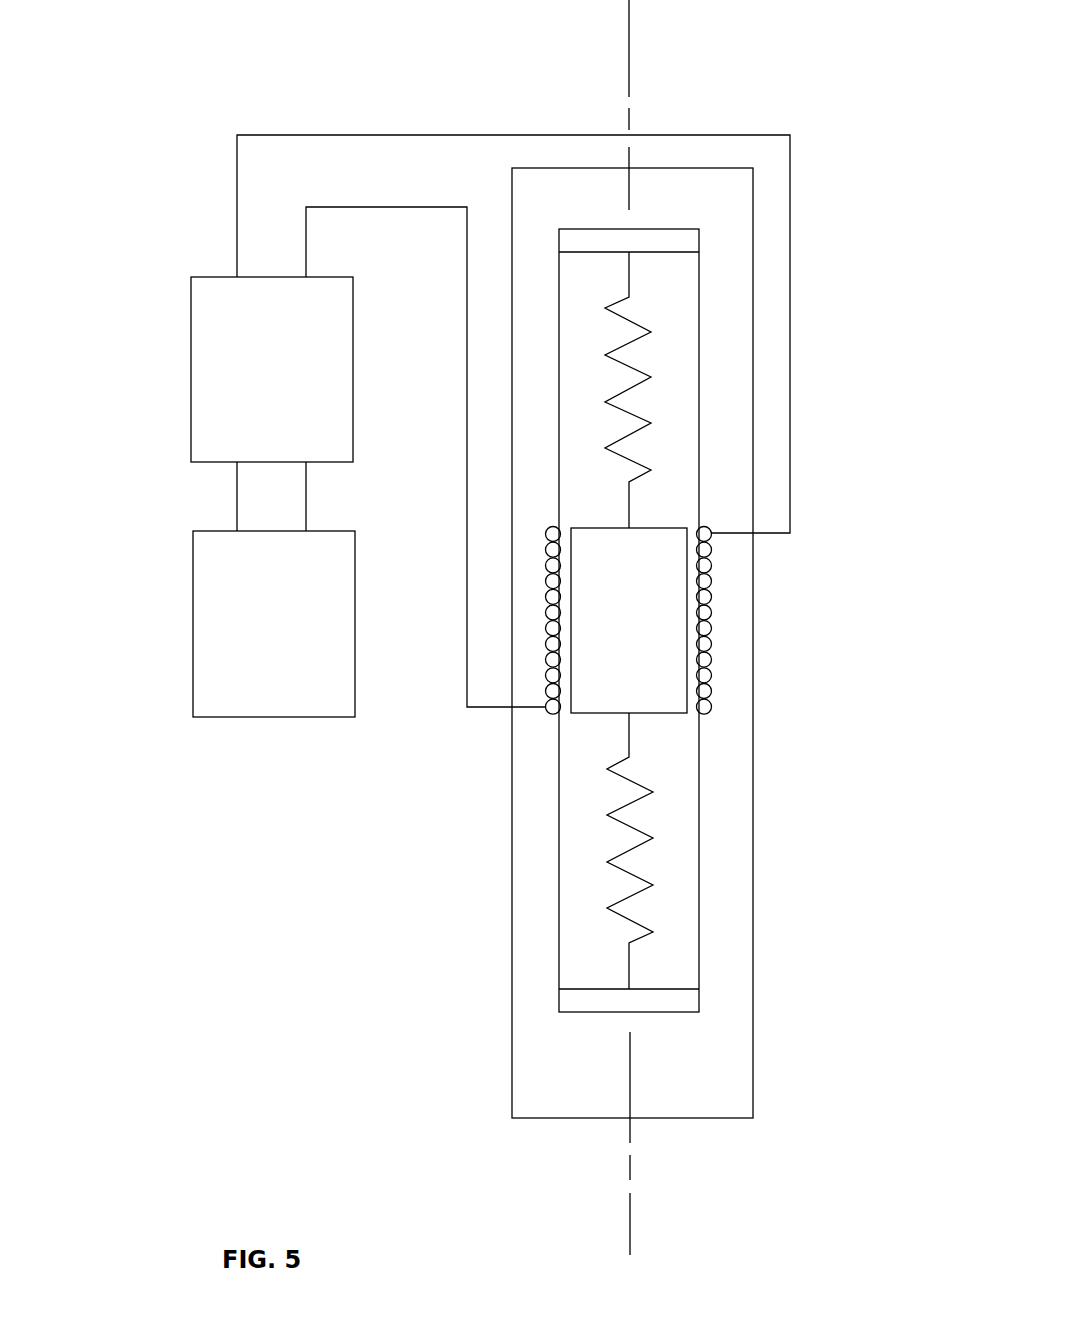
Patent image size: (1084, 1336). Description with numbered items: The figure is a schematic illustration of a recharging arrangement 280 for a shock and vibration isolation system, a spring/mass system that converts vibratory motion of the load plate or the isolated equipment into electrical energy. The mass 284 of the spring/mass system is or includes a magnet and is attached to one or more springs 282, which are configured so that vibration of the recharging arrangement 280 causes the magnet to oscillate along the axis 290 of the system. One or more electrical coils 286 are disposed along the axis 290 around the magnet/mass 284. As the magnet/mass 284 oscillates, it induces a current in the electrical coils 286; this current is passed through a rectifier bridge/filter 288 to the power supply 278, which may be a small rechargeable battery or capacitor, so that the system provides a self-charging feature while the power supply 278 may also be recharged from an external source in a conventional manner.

The power supply 278 is at (193, 613).
The recharging arrangement 280 is at (512, 925).
The springs 282 is at (625, 362).
The mass 284 is at (663, 713).
The electrical coils 286 is at (711, 597).
The rectifier bridge/filter 288 is at (191, 350).
The axis 290 is at (629, 47).